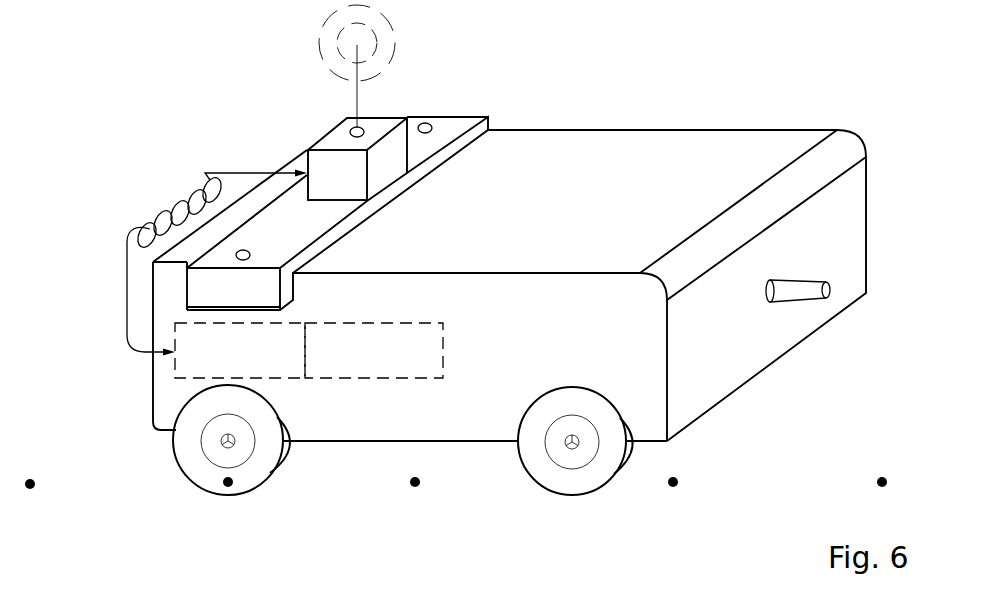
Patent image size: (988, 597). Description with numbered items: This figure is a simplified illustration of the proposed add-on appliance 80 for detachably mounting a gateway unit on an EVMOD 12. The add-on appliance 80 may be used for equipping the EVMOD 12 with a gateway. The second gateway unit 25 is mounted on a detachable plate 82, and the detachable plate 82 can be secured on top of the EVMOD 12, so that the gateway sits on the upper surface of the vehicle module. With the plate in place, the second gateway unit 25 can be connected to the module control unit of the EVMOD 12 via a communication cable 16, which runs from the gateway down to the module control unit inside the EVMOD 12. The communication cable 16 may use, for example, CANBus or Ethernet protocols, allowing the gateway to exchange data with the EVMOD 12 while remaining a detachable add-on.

The add-on product (appliance) 80 is at (196, 104).
The EVMOD 12 is at (812, 140).
The detachable plate 82 is at (474, 122).
The GW2 25 is at (375, 128).
The communication cable 16 is at (163, 210).